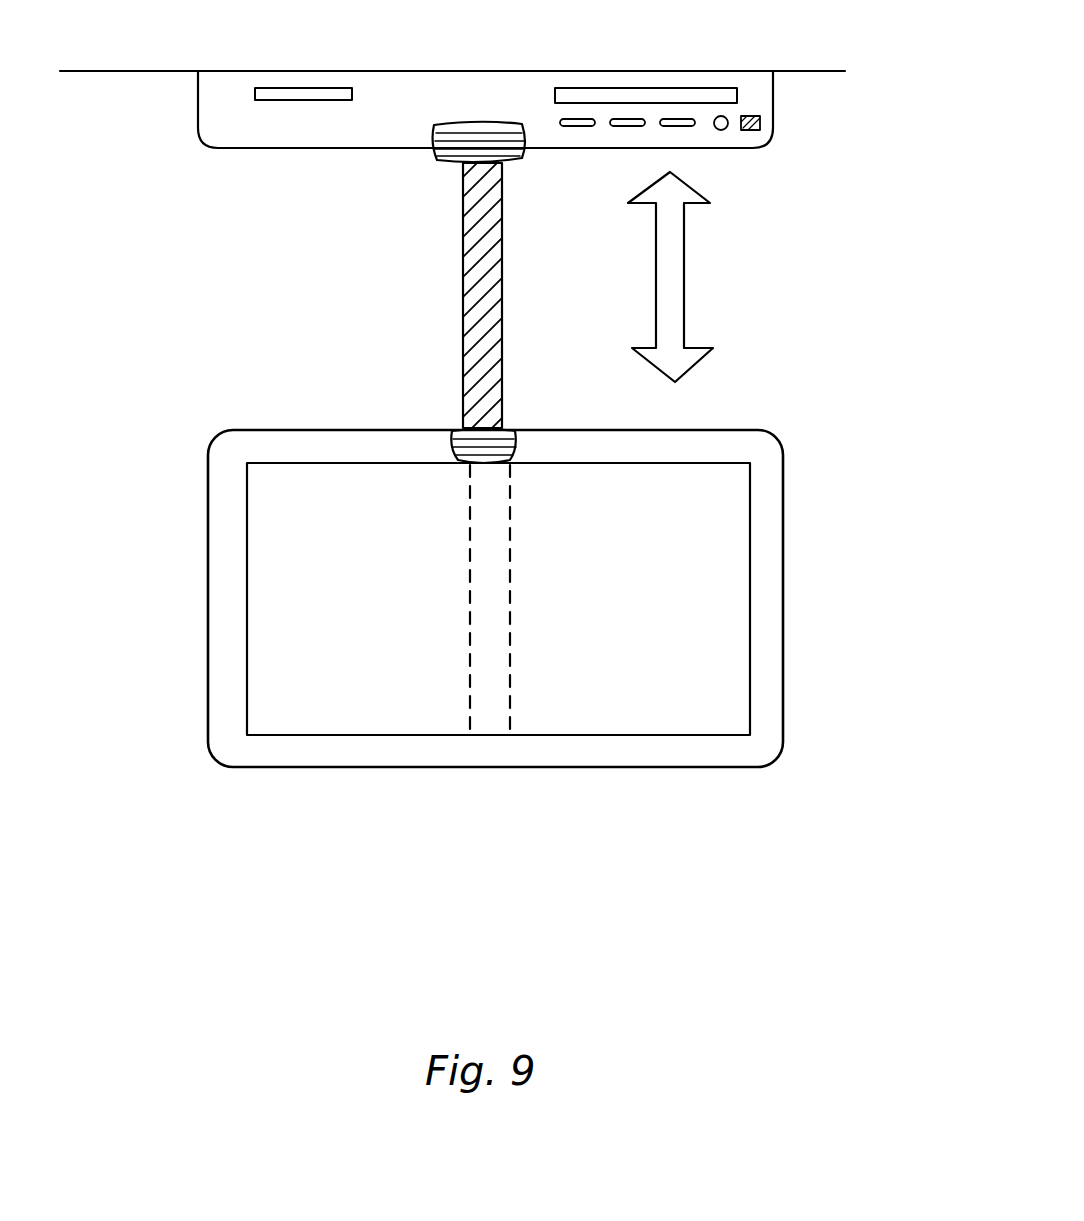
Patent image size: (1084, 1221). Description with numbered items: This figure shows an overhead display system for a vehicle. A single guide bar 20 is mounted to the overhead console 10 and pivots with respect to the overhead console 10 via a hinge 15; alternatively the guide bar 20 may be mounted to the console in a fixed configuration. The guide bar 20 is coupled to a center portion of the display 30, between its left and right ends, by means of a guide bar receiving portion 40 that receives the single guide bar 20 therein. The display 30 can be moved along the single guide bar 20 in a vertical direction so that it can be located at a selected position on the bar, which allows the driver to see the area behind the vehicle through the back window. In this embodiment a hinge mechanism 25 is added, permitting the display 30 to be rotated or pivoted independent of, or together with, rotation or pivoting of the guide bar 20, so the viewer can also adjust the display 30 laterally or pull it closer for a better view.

The overhead console 10 is at (763, 98).
The hinge 15 is at (435, 150).
The single guide bar 20 is at (473, 275).
The hinge mechanism 25 is at (455, 450).
The display 30 is at (700, 638).
The guide bar receiving portion 40 is at (497, 660).